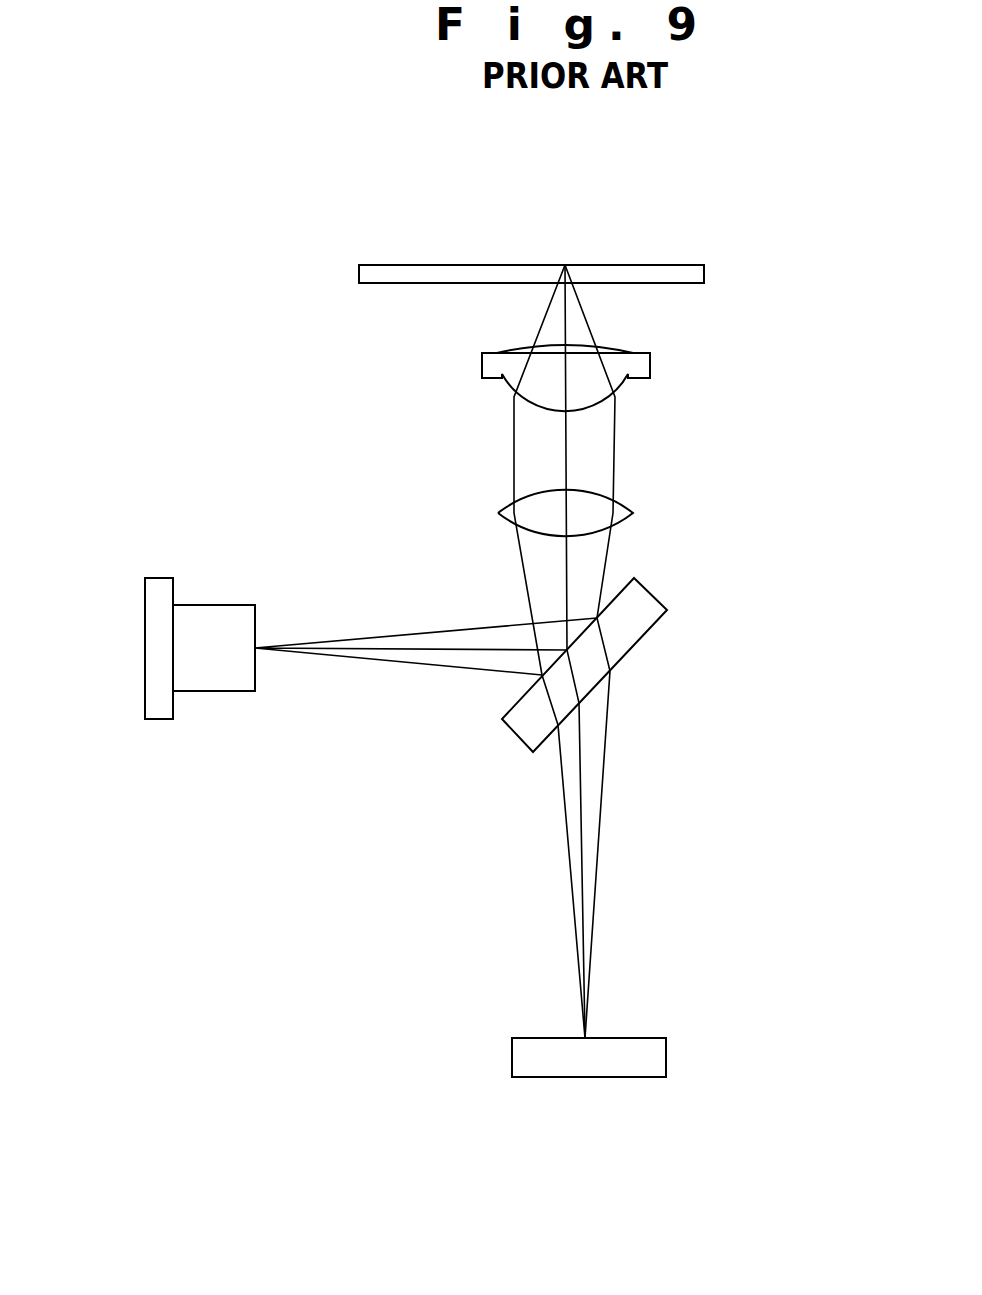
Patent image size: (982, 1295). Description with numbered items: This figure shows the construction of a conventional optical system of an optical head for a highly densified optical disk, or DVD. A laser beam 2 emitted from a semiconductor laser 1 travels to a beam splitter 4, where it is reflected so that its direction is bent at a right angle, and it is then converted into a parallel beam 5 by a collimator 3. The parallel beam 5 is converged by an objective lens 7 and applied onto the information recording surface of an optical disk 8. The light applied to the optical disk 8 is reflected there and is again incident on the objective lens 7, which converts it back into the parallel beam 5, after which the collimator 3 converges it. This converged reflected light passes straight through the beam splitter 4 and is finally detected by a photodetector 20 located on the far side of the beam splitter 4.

The semiconductor laser 1 is at (129, 726).
The laser beam 2 is at (414, 675).
The collimator 3 is at (586, 515).
The beam splitter 4 is at (677, 596).
The parallel beam 5 is at (605, 457).
The objective lens 7 is at (464, 347).
The optical disk 8 is at (666, 249).
The photodetector 20 is at (497, 1065).